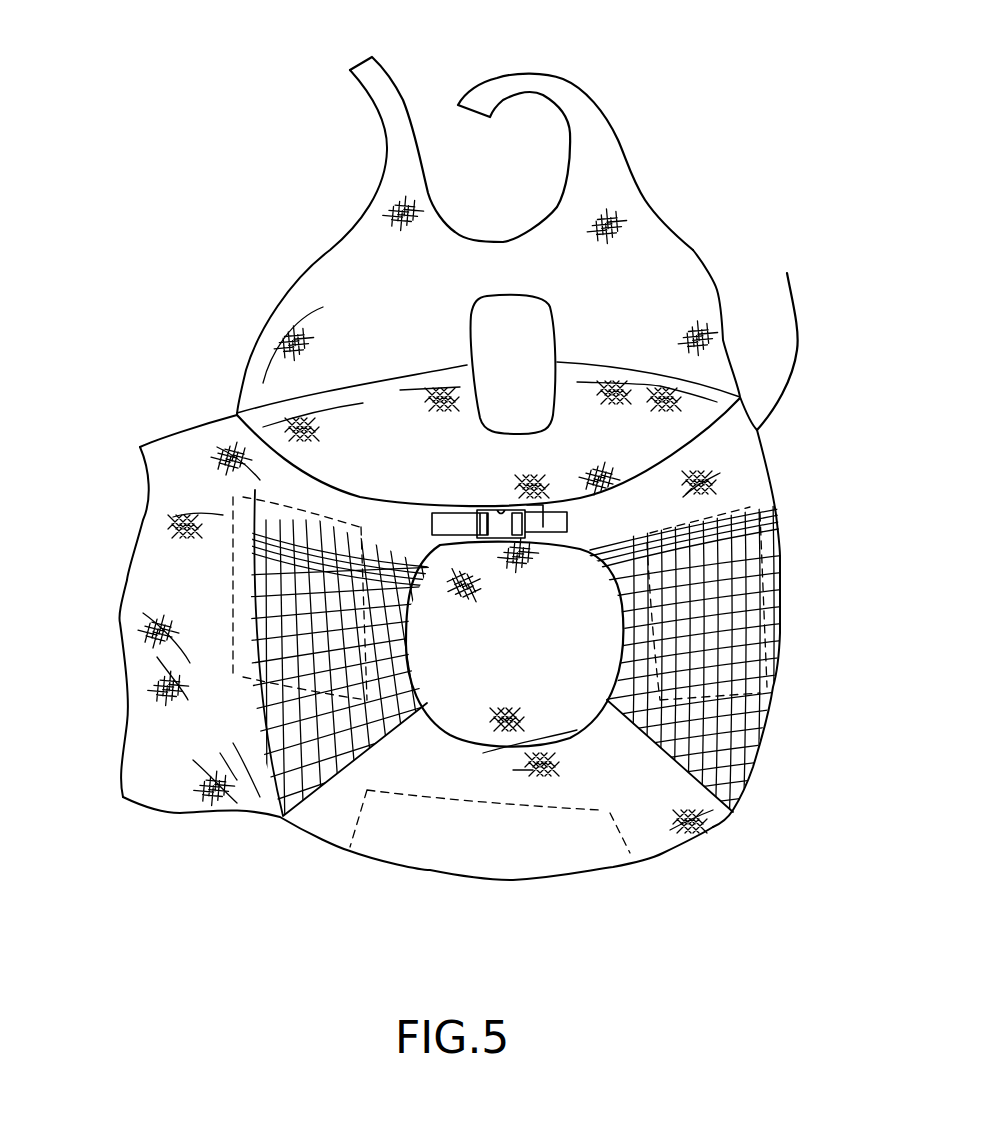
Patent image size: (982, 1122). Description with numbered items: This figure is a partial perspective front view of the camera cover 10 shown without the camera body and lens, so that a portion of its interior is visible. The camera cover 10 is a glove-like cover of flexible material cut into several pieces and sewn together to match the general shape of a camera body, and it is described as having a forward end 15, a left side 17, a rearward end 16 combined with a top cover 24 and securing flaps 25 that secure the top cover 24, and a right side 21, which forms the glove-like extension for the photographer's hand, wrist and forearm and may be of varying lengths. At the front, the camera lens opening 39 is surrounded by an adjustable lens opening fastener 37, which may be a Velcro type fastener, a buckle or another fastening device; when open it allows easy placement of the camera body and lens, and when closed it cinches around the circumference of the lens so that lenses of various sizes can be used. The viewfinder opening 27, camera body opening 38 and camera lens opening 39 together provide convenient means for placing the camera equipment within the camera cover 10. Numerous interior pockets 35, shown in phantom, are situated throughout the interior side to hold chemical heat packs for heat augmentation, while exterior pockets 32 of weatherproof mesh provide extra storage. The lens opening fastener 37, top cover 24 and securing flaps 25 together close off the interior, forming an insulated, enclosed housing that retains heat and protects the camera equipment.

The camera cover 10 is at (150, 208).
The forward end 15 is at (740, 470).
The rearward end 16 is at (723, 310).
The left side 17 is at (780, 557).
The right side 21 is at (203, 813).
The top cover 24 is at (693, 250).
The securing flaps 25 is at (530, 72).
The viewfinder opening 27 is at (512, 337).
The exterior pockets 32 is at (290, 657).
The interior pockets 35 is at (310, 417).
The lens opening fastener 37 is at (500, 537).
The camera body opening 38 is at (380, 423).
The camera lens opening 39 is at (450, 650).